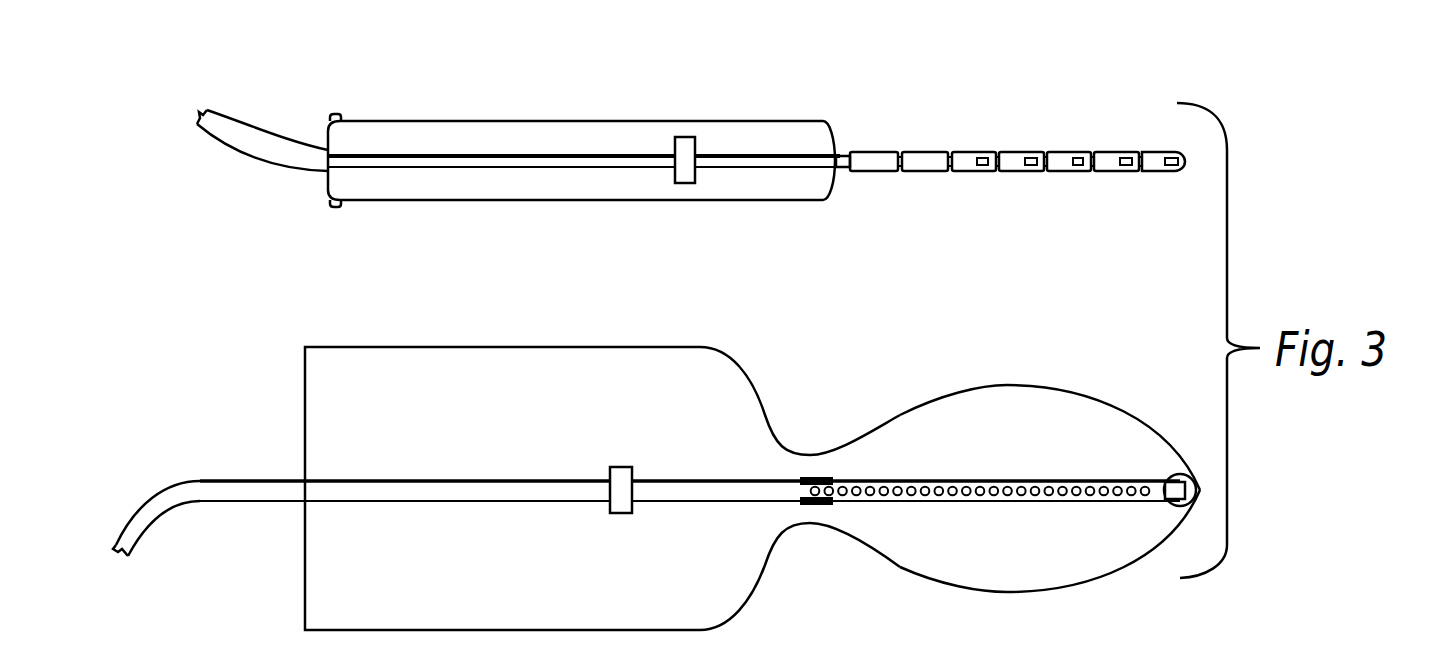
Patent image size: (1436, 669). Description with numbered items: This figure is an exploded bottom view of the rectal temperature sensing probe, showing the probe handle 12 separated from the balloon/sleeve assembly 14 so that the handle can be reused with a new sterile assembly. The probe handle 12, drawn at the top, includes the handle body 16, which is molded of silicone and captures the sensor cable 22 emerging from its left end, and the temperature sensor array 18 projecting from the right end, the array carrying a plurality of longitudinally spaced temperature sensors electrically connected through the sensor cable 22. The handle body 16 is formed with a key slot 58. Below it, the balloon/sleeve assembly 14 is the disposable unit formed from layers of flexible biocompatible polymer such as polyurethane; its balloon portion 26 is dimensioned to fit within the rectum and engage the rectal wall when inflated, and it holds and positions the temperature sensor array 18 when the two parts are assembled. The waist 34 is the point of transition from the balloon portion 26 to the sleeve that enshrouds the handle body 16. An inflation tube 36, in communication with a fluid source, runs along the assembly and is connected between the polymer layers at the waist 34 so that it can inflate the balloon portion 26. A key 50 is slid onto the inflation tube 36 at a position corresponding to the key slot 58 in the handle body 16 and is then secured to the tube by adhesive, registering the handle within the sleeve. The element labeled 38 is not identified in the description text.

The probe handle 12 is at (762, 104).
The balloon/sleeve assembly 14 is at (776, 359).
The handle body 16 is at (466, 121).
The temperature sensor array 18 is at (965, 152).
The sensor cable 22 is at (233, 127).
The balloon portion 26 is at (1065, 393).
The waist 34 is at (840, 426).
The inflation tube 36 is at (290, 481).
The tube 38 is at (437, 163).
The key 50 is at (618, 495).
The key slot 58 is at (681, 173).